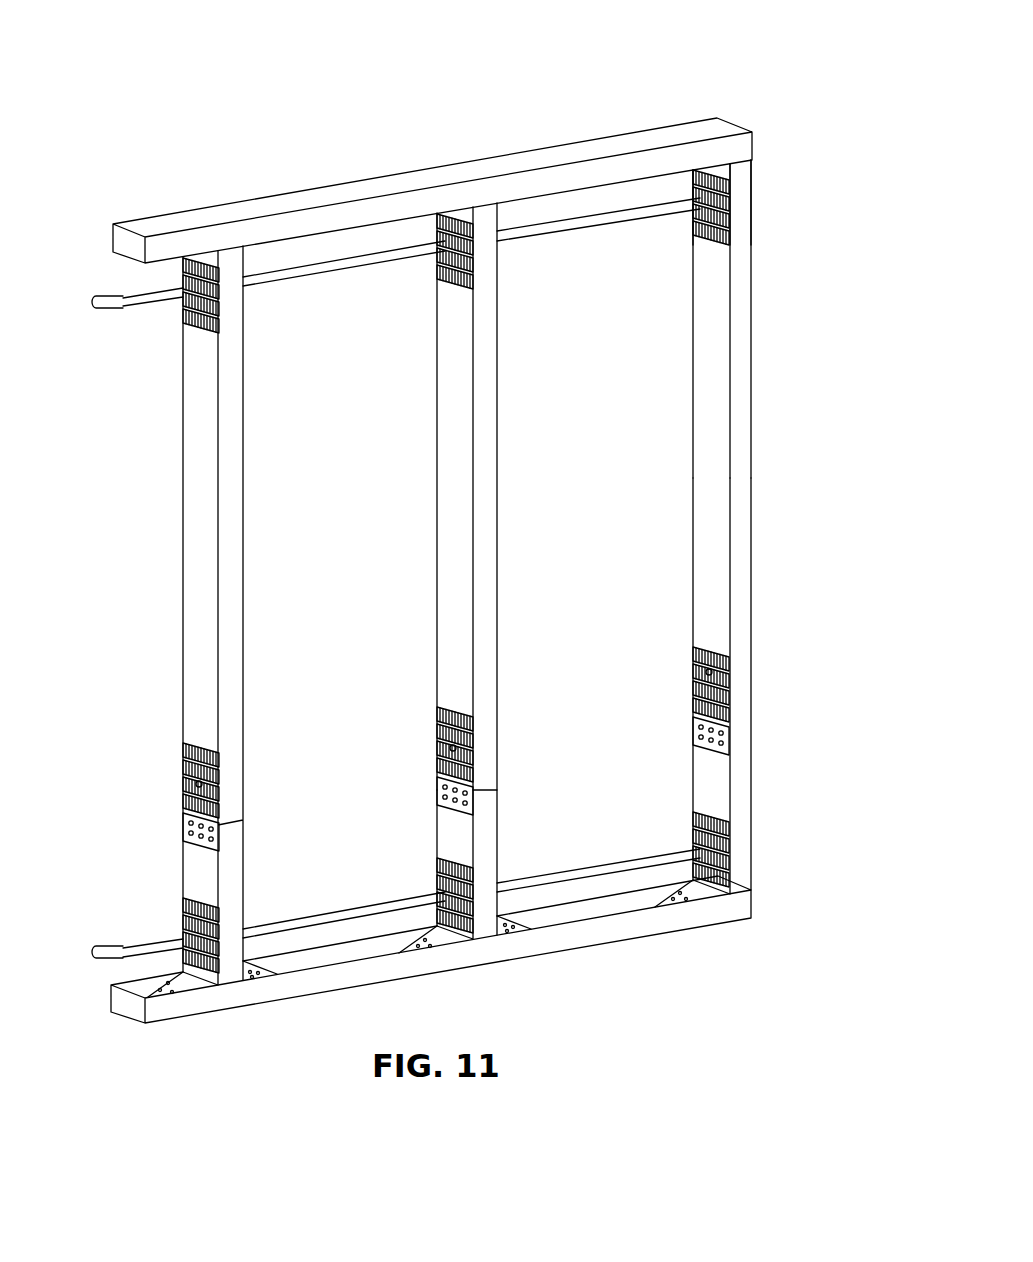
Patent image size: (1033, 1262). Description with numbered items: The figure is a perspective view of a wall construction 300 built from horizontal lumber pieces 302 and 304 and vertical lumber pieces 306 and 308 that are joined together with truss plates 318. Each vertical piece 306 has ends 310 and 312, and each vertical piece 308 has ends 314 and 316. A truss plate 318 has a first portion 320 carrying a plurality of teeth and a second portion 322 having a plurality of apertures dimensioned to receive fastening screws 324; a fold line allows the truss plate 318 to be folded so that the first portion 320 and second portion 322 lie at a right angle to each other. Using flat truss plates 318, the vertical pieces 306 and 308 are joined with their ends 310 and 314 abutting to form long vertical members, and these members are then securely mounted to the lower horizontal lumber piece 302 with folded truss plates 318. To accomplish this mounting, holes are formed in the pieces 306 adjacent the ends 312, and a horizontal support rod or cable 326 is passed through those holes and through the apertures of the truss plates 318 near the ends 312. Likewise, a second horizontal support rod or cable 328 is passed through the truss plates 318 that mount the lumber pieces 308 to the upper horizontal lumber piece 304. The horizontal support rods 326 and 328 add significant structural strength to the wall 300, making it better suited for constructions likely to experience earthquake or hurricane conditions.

The wall construction 300 is at (638, 78).
The horizontal lumber piece 302 is at (617, 937).
The horizontal lumber piece 304 is at (640, 140).
The vertical lumber piece 306 is at (742, 777).
The vertical lumber piece 308 is at (745, 478).
The end of piece 306 310 is at (487, 793).
The end of piece 306 312 is at (487, 937).
The end of piece 308 314 is at (730, 733).
The end of piece 308 316 is at (742, 168).
The truss plate 318 is at (458, 708).
The first portion 320 is at (182, 753).
The second portion 322 is at (180, 832).
The fastening screws 324 is at (727, 213).
The horizontal support rod 326 is at (297, 917).
The horizontal support rod 328 is at (328, 275).